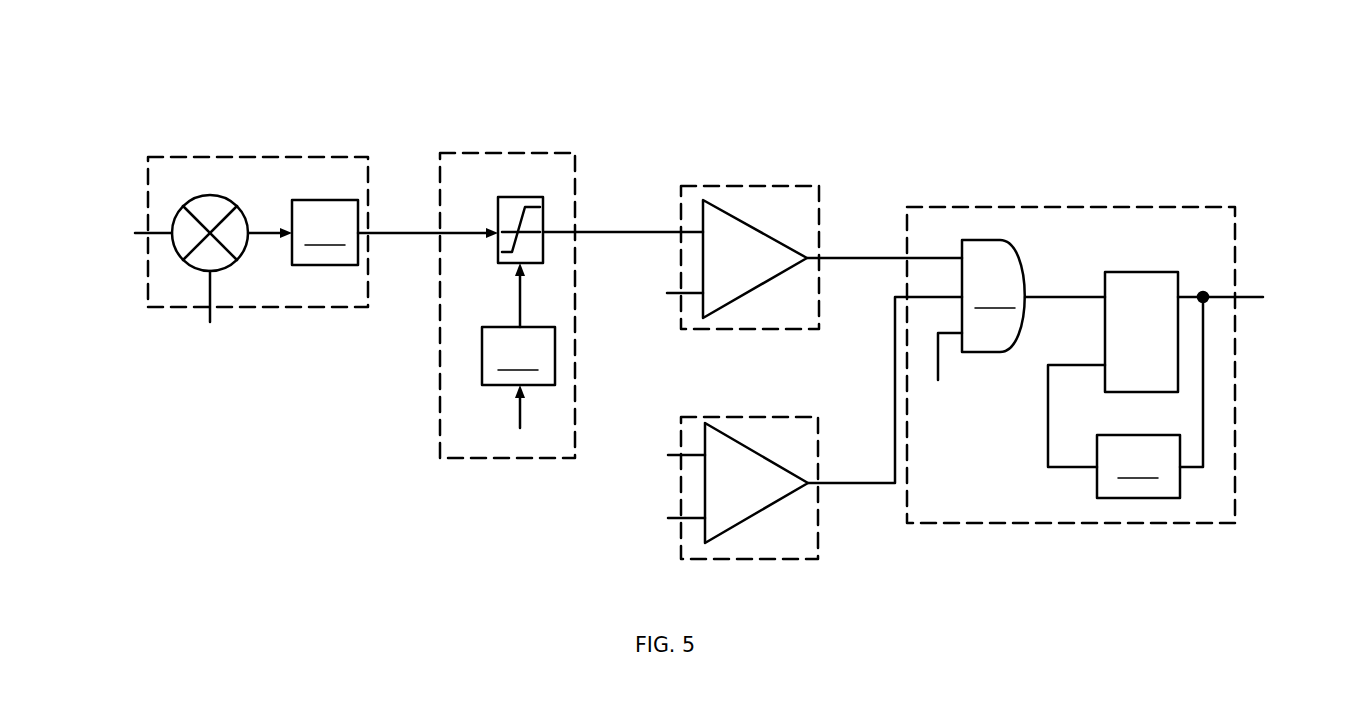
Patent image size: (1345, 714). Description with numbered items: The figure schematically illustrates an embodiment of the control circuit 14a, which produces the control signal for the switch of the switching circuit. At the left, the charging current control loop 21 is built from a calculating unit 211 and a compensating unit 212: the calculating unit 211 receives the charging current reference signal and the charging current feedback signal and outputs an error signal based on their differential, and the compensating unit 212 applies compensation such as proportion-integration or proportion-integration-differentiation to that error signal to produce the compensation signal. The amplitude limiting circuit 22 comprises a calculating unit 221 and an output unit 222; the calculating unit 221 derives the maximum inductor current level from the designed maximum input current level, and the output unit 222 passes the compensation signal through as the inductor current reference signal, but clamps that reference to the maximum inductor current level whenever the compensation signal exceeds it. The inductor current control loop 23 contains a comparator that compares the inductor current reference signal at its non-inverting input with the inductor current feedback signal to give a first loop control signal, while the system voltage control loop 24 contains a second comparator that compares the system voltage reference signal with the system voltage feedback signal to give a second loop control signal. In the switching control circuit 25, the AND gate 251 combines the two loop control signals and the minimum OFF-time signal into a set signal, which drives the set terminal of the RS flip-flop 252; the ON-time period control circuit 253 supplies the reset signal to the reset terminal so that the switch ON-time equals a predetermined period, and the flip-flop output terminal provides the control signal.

The control circuit 14a is at (1040, 97).
The charging current control loop 21 is at (203, 157).
The calculating unit 211 is at (210, 195).
The compensating unit 212 is at (325, 232).
The amplitude limiting circuit 22 is at (522, 153).
The calculating unit 221 is at (518, 356).
The output unit 222 is at (507, 197).
The inductor current control loop 23 is at (727, 186).
The system voltage control loop 24 is at (727, 417).
The switching control circuit 25 is at (1030, 207).
The AND gate 251 is at (993, 296).
The RS flip-flop 252 is at (1117, 272).
The ON-time period control circuit 253 is at (1138, 466).